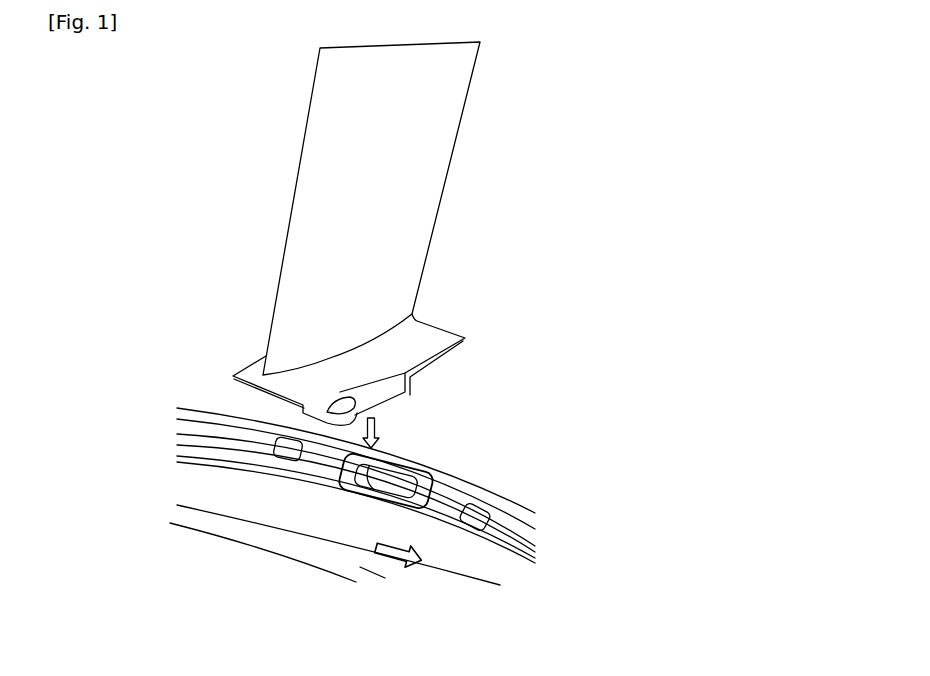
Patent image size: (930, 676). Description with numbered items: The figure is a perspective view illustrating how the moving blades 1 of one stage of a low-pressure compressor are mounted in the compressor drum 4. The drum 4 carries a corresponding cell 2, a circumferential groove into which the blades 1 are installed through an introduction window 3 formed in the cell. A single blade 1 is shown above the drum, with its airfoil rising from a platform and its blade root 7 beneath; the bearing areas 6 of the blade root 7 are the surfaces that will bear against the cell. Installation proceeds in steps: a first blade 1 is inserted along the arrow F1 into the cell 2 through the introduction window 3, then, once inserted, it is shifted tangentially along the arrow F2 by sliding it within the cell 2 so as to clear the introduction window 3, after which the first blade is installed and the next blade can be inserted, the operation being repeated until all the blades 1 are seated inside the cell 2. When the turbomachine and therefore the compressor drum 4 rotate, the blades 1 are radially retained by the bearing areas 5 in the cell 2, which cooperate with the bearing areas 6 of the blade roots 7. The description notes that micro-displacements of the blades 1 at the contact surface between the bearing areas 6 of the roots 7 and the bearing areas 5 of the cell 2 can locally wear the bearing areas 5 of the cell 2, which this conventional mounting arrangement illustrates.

The moving blade 1 is at (435, 83).
The cell 2 is at (535, 560).
The introduction window 3 is at (345, 488).
The compressor drum 4 is at (203, 513).
The bearing areas 5 is at (503, 541).
The bearing areas 6 is at (336, 408).
The blade root 7 is at (390, 388).
The arrow F1 is at (377, 430).
The arrow F2 is at (385, 553).